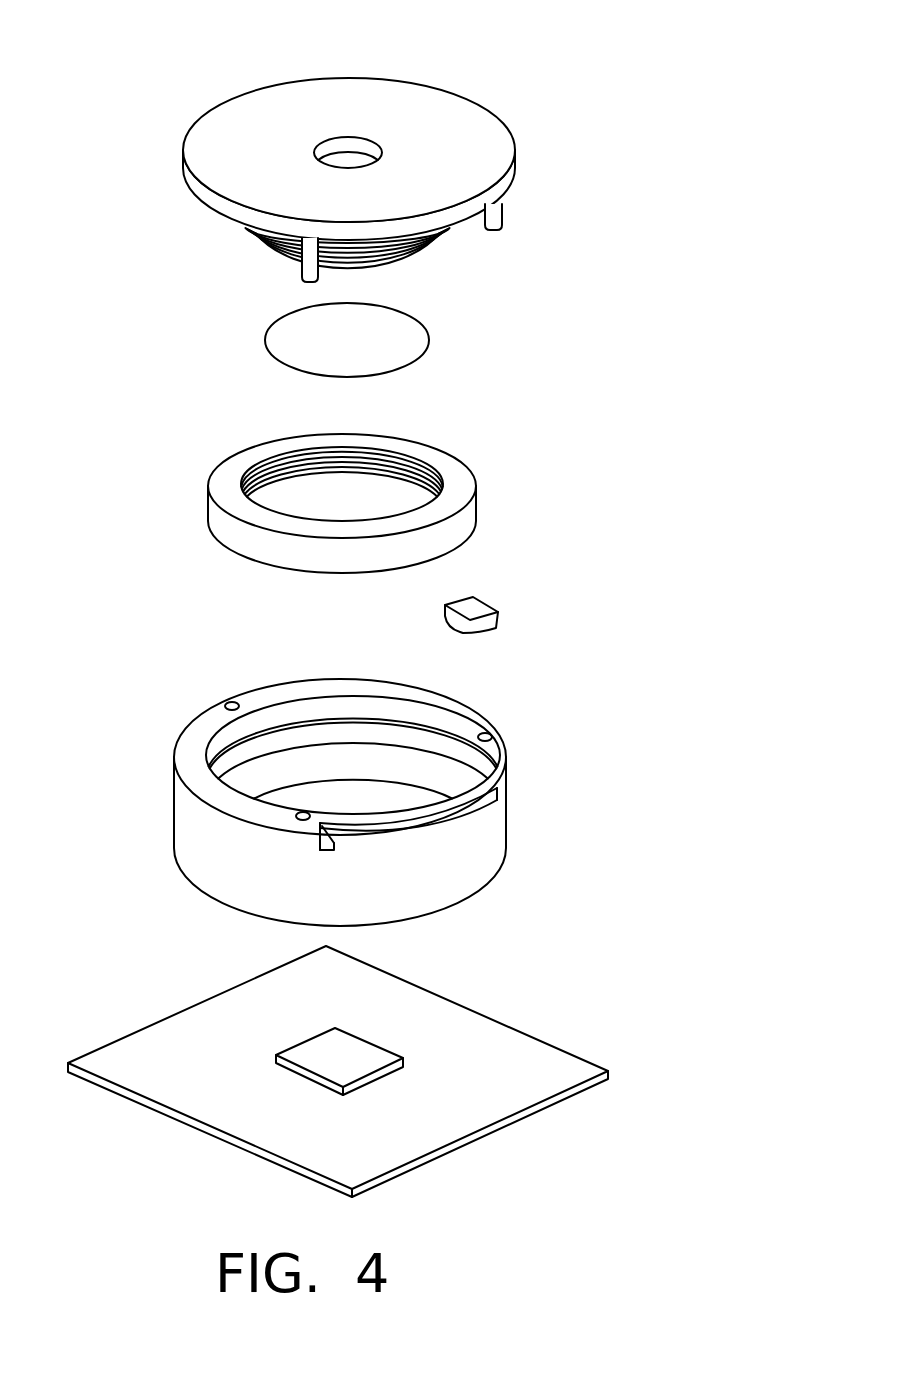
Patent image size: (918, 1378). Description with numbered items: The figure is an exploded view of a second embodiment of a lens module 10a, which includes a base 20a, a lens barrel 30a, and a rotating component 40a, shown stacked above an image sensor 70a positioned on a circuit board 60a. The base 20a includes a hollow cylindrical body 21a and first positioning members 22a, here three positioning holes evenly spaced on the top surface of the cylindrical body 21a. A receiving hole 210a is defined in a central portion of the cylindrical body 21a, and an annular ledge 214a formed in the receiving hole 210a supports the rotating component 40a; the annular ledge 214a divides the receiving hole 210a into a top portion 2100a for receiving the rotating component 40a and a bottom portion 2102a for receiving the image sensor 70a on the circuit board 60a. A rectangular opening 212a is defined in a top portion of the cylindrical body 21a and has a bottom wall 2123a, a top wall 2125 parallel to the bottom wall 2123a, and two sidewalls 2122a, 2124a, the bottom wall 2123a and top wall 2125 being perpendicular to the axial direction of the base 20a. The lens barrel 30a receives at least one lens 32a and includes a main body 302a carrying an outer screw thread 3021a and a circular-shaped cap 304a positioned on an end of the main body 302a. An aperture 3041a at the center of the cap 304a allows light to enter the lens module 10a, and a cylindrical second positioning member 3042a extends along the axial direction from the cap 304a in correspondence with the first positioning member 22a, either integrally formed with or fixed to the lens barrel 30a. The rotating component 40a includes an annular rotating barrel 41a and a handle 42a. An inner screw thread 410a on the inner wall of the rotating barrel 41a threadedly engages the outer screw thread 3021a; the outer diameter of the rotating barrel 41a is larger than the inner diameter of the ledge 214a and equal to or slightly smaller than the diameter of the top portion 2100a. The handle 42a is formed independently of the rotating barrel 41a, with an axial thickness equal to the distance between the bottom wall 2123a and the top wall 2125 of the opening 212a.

The lens module 10a is at (360, 38).
The lens barrel 30a is at (178, 120).
The main body 302a is at (268, 250).
The outer screw thread 3021a is at (403, 260).
The cap 304a is at (515, 165).
The aperture 3041a is at (352, 158).
The second positioning member 3042a is at (496, 218).
The lens 32a is at (415, 343).
The rotating component 40a is at (608, 423).
The rotating barrel 41a is at (457, 492).
The inner screw thread 410a is at (398, 463).
The handle 42a is at (478, 608).
The base 20a is at (152, 750).
The cylindrical body 21a is at (187, 824).
The first positioning member 22a is at (228, 700).
The annular ledge 214a is at (317, 722).
The receiving hole 210a is at (628, 652).
The top portion 2100a is at (427, 722).
The bottom portion 2102a is at (418, 767).
The opening 212a is at (655, 775).
The sidewall 2122a is at (482, 797).
The bottom wall 2123a is at (443, 823).
The sidewall 2124a is at (326, 837).
The top wall 2125 is at (418, 827).
The circuit board 60a is at (545, 1072).
The image sensor 70a is at (298, 1048).